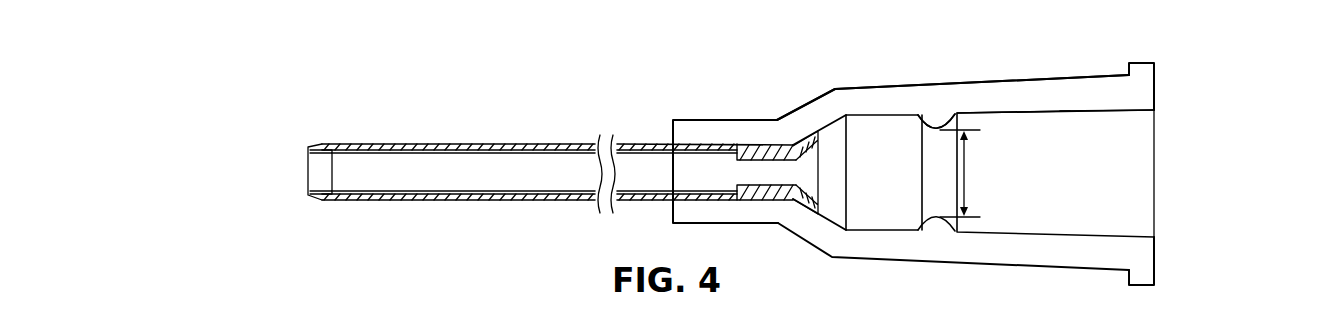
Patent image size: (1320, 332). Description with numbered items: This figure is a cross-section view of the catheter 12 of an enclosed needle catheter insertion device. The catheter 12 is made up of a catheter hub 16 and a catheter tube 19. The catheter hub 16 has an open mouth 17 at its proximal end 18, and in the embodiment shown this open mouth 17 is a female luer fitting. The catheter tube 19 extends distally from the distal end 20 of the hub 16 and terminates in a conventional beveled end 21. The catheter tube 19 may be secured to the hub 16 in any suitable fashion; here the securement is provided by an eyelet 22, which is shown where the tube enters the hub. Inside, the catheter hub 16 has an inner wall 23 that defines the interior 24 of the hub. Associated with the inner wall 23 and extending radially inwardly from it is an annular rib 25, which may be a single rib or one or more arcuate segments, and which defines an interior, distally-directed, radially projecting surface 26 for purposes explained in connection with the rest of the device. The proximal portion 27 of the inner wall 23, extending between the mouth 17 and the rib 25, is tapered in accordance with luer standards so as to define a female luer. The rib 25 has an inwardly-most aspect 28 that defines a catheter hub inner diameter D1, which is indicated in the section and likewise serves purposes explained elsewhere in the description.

The catheter 12 is at (749, 70).
The catheter hub 16 is at (850, 88).
The open mouth 17 is at (1155, 170).
The proximal end 18 is at (1155, 92).
The catheter tube 19 is at (498, 144).
The distal end 20 is at (677, 120).
The beveled end 21 is at (322, 146).
The eyelet 22 is at (812, 200).
The inner wall 23 is at (1021, 115).
The interior 24 is at (1056, 184).
The annular rib 25 is at (914, 128).
The radially projecting surface 26 is at (917, 131).
The proximal portion 27 is at (1067, 112).
The inwardly-most aspect 28 is at (934, 178).
The catheter hub inner diameter D1 is at (960, 173).